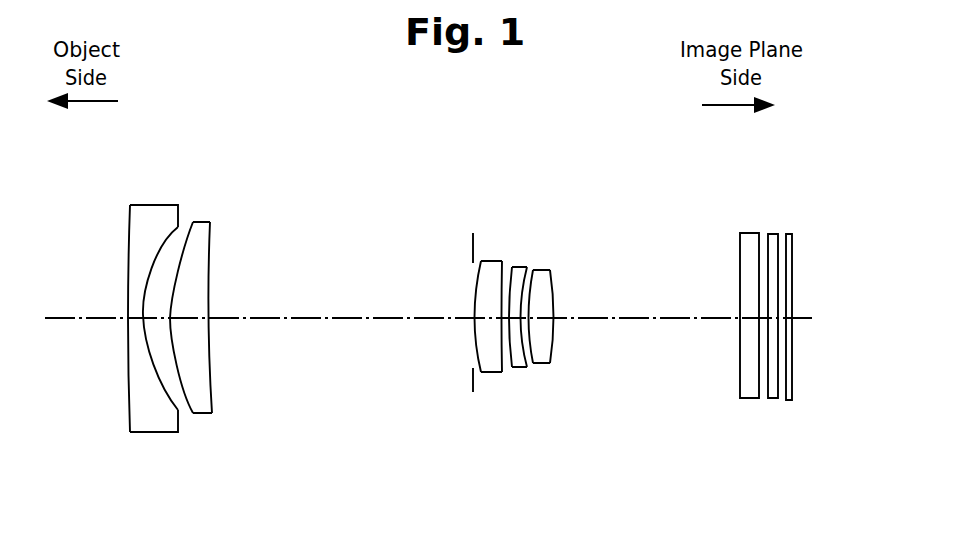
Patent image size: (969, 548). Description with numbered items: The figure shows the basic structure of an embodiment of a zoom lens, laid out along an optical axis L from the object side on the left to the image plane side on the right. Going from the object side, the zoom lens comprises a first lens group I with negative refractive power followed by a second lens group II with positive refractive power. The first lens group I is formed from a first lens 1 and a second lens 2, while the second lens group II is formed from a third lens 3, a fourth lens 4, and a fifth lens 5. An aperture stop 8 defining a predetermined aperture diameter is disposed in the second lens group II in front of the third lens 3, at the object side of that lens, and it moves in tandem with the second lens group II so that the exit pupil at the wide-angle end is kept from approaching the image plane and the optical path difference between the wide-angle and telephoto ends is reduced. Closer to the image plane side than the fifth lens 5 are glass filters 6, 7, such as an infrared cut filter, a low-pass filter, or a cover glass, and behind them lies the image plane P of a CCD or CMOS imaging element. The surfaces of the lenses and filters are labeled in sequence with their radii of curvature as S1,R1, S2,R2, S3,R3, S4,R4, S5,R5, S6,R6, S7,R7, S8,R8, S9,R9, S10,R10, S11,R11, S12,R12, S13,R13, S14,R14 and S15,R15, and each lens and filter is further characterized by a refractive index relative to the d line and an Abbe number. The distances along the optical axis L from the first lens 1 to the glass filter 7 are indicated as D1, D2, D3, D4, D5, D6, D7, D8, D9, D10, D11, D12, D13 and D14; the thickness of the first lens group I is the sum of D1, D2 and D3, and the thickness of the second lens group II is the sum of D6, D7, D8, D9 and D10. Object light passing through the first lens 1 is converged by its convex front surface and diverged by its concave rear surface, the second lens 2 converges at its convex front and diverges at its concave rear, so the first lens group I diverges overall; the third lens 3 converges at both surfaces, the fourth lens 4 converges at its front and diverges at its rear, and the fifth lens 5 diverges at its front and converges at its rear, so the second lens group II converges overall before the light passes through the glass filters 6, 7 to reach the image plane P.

The first lens 1 is at (156, 198).
The second lens 2 is at (200, 213).
The third lens 3 is at (487, 251).
The fourth lens 4 is at (521, 257).
The fifth lens 5 is at (541, 260).
The glass filter 6 is at (748, 224).
The glass filter 7 is at (770, 225).
The aperture stop 8 is at (469, 224).
The image plane P is at (790, 225).
The optical axis L is at (63, 322).
The first lens group I is at (142, 147).
The second lens group II is at (568, 147).
The distance D1 is at (130, 333).
The distance D2 is at (140, 292).
The distance D3 is at (193, 308).
The distance D4 is at (312, 310).
The distance D5 is at (470, 308).
The distance D6 is at (477, 333).
The distance D7 is at (503, 316).
The distance D8 is at (530, 340).
The distance D9 is at (545, 333).
The distance D10 is at (558, 304).
The distance D11 is at (667, 318).
The distance D12 is at (750, 318).
The distance D13 is at (782, 318).
The distance D14 is at (782, 314).
The front surface S1 and radius of curvature R1 S1,R1 is at (128, 395).
The rear surface S2 and radius of curvature R2 S2,R2 is at (157, 370).
The front surface S3 and radius of curvature R3 S3,R3 is at (166, 343).
The rear surface S4 and radius of curvature R4 S4,R4 is at (210, 352).
The surface S5 and radius of curvature R5 S5,R5 is at (477, 256).
The front surface S6 and radius of curvature R6 S6,R6 is at (490, 372).
The rear surface S7 and radius of curvature R7 S7,R7 is at (512, 368).
The front surface S8 and radius of curvature R8 S8,R8 is at (525, 368).
The rear surface S9 and radius of curvature R9 S9,R9 is at (534, 290).
The front surface S10 and radius of curvature R10 S10,R10 is at (540, 306).
The rear surface S11 and radius of curvature R11 S11,R11 is at (553, 342).
The surface S12 and radius of curvature R12 S12,R12 is at (743, 382).
The surface S13 and radius of curvature R13 S13,R13 is at (766, 399).
The surface S14 and radius of curvature R14 S14,R14 is at (768, 275).
The surface S15 and radius of curvature R15 S15,R15 is at (777, 289).